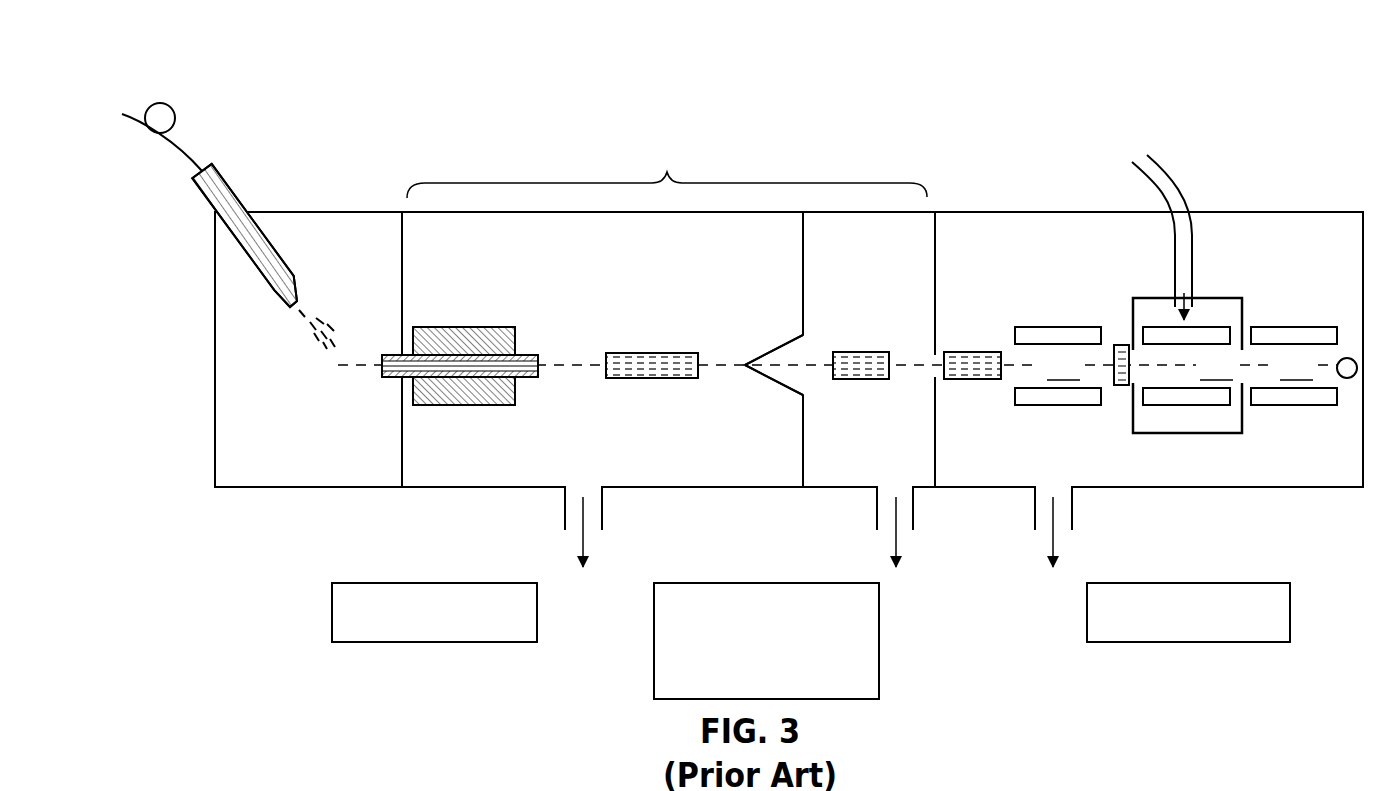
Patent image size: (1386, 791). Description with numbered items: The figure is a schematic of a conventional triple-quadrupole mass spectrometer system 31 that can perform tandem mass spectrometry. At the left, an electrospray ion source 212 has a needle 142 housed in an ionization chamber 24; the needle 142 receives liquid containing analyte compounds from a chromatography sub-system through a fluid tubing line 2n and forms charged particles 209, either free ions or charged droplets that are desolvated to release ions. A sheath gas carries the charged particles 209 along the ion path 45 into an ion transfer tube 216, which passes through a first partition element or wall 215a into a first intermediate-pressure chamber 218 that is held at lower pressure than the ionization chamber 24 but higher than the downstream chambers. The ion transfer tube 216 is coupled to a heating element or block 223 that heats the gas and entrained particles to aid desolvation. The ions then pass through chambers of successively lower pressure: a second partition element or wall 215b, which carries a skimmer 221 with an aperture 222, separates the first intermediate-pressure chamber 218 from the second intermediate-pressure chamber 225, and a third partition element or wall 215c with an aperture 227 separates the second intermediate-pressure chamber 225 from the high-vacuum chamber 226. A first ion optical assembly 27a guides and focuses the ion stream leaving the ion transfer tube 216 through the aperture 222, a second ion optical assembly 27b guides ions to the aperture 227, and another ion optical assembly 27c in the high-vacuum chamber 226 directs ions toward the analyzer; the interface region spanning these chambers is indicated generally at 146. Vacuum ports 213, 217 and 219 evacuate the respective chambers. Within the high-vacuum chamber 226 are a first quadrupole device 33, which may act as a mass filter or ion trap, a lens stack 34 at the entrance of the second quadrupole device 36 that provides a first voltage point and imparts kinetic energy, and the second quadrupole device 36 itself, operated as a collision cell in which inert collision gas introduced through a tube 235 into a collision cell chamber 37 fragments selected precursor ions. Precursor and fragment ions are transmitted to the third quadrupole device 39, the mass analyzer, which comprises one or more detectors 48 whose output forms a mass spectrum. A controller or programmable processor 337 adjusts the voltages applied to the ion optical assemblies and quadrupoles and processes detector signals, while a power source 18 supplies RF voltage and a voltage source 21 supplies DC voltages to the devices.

The mass spectrometer system 31 is at (803, 51).
The fluid tubing line 2n is at (177, 145).
The needle 142 is at (230, 192).
The electrospray ion source 212 is at (343, 180).
The vacuum interface 146 is at (667, 165).
The tube 235 is at (1178, 182).
The charged particles 209 is at (342, 330).
The ion transfer tube 216 is at (533, 350).
The heating element or block 223 is at (472, 328).
The first ion optical assembly 27a is at (661, 353).
The aperture 222 is at (740, 361).
The second ion optical assembly 27b is at (869, 352).
The aperture 227 is at (927, 361).
The ion optical assembly 27c is at (973, 352).
The first quadrupole device 33 is at (1041, 296).
The second quadrupole device 36 is at (1157, 282).
The third quadrupole device 39 is at (1268, 292).
The lens stack 34 is at (1121, 388).
The collision cell chamber 37 is at (1200, 433).
The detectors 48 is at (1347, 378).
The ionization chamber 24 is at (302, 442).
The ion path 45 is at (357, 367).
The first partition element or wall 215a is at (405, 461).
The first intermediate-pressure chamber 218 is at (590, 464).
The second partition element or wall 215b is at (800, 461).
The skimmer 221 is at (773, 382).
The second intermediate-pressure chamber 225 is at (890, 474).
The third partition element or wall 215c is at (937, 438).
The high-vacuum chamber 226 is at (1052, 474).
The vacuum port 213 is at (603, 510).
The vacuum port 217 is at (914, 510).
The vacuum port 219 is at (1073, 510).
The power source 18 is at (443, 583).
The controller or programmable processor 337 is at (767, 583).
The voltage source 21 is at (1198, 583).